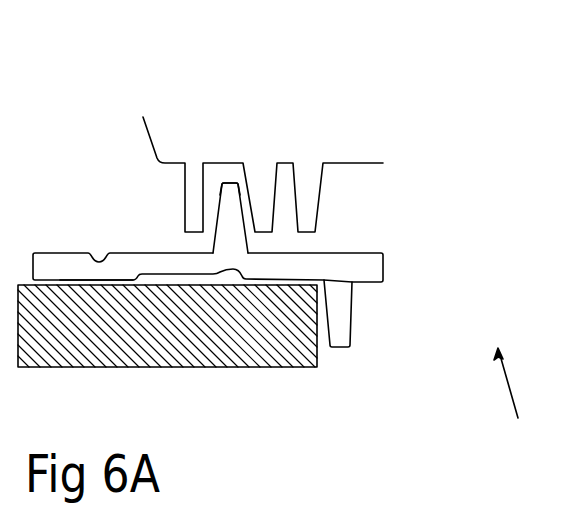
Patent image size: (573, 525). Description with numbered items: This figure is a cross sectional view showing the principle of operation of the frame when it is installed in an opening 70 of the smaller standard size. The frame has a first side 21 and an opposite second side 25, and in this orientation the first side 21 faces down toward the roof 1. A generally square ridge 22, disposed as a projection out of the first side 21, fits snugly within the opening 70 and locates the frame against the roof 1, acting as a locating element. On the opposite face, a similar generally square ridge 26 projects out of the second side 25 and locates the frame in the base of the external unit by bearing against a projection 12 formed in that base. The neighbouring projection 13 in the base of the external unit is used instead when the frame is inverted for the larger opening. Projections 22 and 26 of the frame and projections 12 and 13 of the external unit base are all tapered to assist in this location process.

The roof 1 is at (267, 367).
The projection 12 is at (247, 190).
The projection 13 is at (325, 182).
The first side 21 is at (88, 280).
The ridge 22 is at (350, 315).
The second side 25 is at (138, 255).
The ridge 26 is at (230, 183).
The opening 70 is at (512, 401).